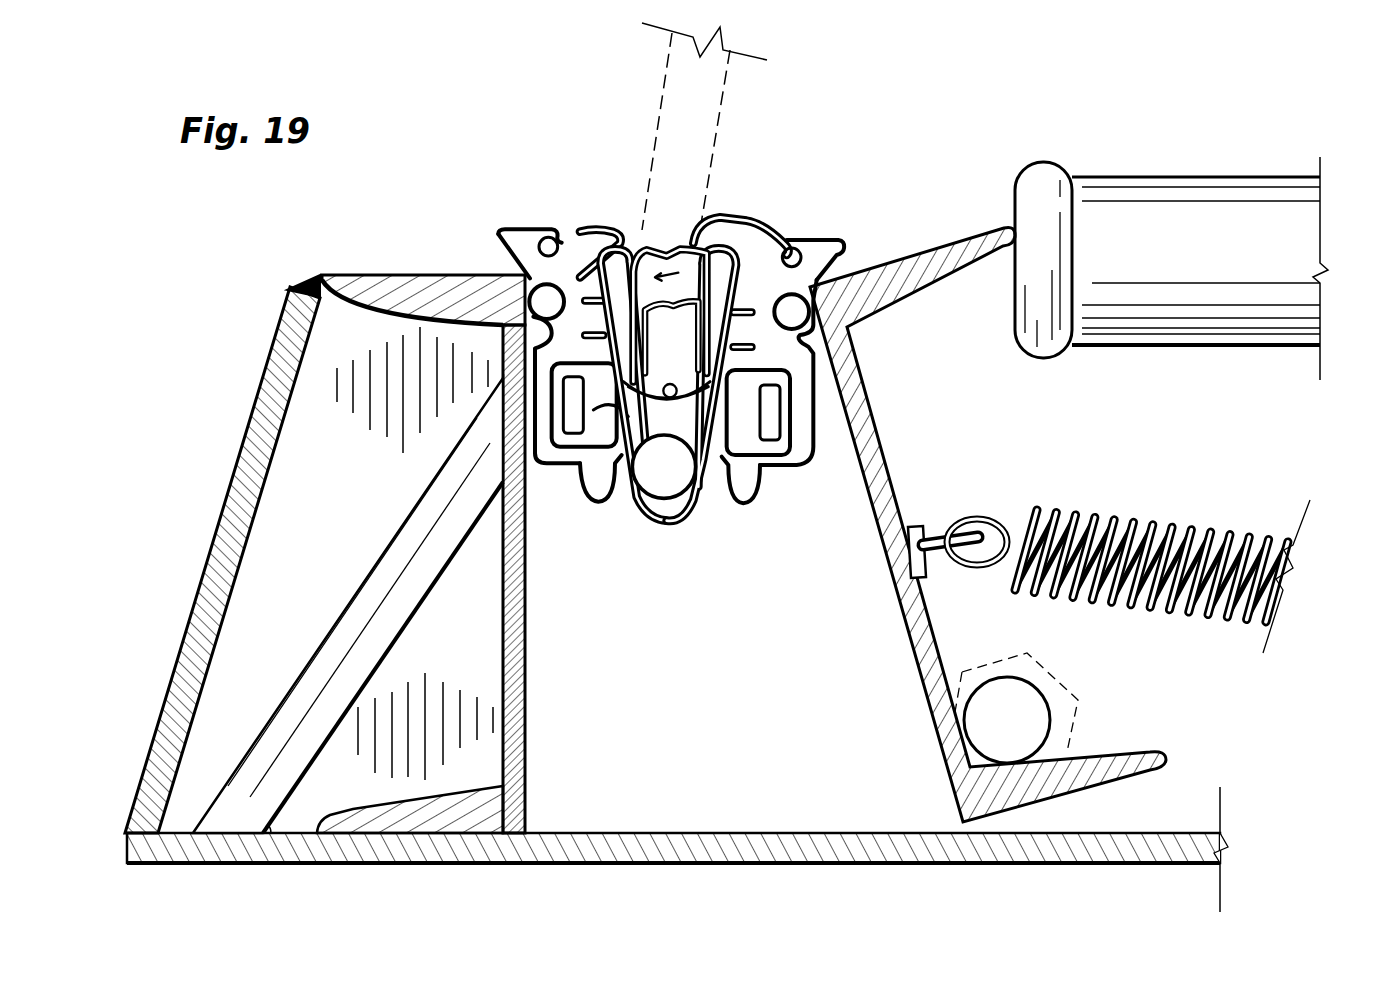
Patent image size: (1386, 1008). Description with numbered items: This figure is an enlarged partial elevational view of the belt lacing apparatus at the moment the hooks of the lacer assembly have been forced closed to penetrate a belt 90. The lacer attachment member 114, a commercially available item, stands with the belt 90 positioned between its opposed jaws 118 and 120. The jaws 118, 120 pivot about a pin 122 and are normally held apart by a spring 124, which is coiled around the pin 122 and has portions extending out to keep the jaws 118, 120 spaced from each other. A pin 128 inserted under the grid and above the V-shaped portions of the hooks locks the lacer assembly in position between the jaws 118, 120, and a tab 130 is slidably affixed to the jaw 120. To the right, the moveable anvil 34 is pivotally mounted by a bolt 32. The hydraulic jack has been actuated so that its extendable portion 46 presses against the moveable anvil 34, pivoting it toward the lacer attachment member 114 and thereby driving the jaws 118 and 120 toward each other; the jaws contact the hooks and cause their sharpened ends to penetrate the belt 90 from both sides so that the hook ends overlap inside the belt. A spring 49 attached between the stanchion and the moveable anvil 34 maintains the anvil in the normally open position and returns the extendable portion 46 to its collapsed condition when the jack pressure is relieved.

The belt 90 is at (663, 122).
The lacer attachment member 114 is at (812, 170).
The jaw 118 is at (833, 255).
The jaw 120 is at (513, 245).
The tab 130 is at (742, 230).
The extendable portion 46 is at (1183, 183).
The moveable anvil 34 is at (877, 463).
The spring 49 is at (1200, 530).
The bolt 32 is at (1030, 707).
The spring 124 is at (620, 427).
The pin 128 is at (670, 400).
The pin 122 is at (655, 485).